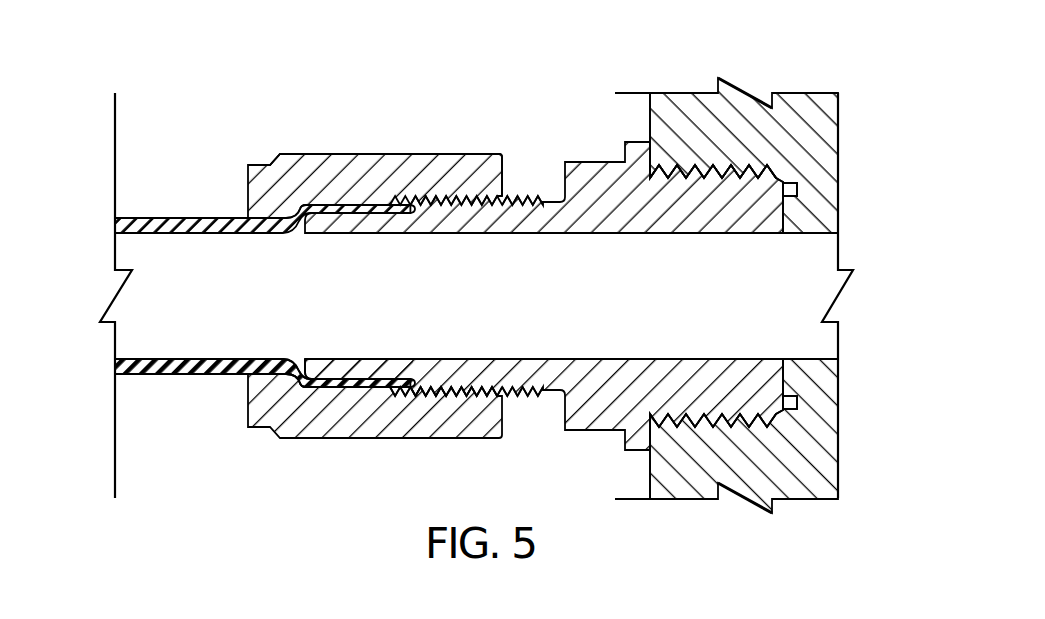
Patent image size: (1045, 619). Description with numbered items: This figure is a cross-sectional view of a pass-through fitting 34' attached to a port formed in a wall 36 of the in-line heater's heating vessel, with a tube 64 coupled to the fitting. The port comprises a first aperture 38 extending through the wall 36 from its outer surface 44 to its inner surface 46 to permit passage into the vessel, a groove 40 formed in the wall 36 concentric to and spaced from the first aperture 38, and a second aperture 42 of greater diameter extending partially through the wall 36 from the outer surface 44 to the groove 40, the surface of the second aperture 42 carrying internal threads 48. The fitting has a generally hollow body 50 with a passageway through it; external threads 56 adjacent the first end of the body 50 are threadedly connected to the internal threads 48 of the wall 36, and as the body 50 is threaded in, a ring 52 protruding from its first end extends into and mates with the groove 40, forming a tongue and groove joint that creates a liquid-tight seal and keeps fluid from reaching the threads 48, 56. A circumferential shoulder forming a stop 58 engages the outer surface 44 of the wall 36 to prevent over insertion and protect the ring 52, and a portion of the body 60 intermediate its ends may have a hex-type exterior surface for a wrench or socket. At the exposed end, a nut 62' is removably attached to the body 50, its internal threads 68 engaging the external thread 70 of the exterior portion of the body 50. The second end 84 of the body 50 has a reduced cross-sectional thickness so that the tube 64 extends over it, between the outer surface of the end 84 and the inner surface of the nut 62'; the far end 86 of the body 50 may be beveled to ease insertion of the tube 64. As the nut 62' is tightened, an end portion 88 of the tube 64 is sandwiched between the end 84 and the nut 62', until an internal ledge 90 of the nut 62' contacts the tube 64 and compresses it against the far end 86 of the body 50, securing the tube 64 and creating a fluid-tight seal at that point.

The pass-through fitting 34' is at (377, 132).
The wall 36 is at (680, 110).
The first aperture 38 is at (825, 253).
The groove 40 is at (797, 406).
The second aperture 42 is at (743, 165).
The outer surface 44 is at (650, 118).
The inner surface 46 is at (840, 163).
The internal threads 48 is at (713, 171).
The body 50 is at (615, 384).
The ring 52 is at (793, 183).
The external threads 56 is at (738, 417).
The stop 58 is at (635, 454).
The portion of the body 60 is at (585, 177).
The nut 62' is at (375, 273).
The tube 64 is at (180, 217).
The internal threads 68 is at (457, 396).
The external thread 70 is at (512, 397).
The second end 84 is at (360, 372).
The far end 86 is at (313, 360).
The end portion 88 is at (378, 211).
The internal ledge 90 is at (300, 384).